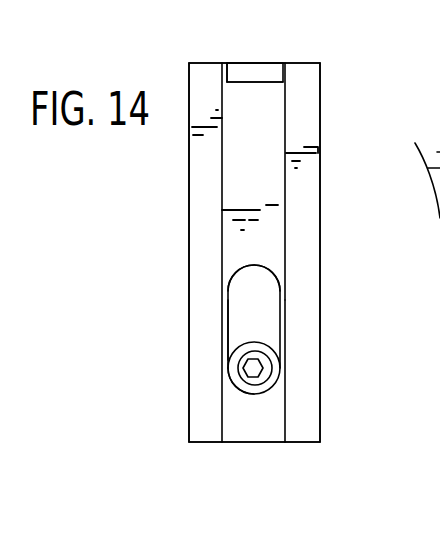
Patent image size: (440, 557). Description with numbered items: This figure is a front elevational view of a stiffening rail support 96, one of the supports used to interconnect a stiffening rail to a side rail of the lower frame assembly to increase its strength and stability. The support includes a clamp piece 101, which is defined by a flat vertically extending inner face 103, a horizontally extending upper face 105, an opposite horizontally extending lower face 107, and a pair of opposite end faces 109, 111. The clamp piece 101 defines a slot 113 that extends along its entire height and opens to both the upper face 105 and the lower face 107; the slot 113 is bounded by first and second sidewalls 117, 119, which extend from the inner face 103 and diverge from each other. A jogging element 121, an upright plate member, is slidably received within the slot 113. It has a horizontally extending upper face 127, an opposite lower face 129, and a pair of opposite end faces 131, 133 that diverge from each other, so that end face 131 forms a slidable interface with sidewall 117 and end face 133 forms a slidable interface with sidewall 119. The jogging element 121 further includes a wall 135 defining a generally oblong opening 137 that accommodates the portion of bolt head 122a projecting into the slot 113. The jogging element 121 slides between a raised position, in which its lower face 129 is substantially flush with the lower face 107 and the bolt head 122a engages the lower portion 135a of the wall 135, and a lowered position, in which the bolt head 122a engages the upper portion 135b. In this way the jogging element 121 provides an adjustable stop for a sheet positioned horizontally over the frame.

The stiffening rail support 96 is at (297, 465).
The clamp piece 101 is at (208, 443).
The inner face 103 is at (196, 398).
The upper face 105 is at (200, 63).
The lower face 107 is at (305, 442).
The end face 109 is at (189, 252).
The end face 111 is at (320, 252).
The slot 113 is at (270, 72).
The first sidewall 117 is at (225, 143).
The second sidewall 119 is at (284, 121).
The jogging element 121 is at (241, 77).
The bolt head 122a is at (234, 365).
The upper face 127 is at (253, 78).
The lower face 129 is at (250, 444).
The end face 131 is at (222, 210).
The end face 133 is at (287, 411).
The wall 135 is at (227, 326).
The lower portion of wall 135a is at (243, 394).
The upper portion of wall 135b is at (258, 272).
The oblong opening 137 is at (270, 308).